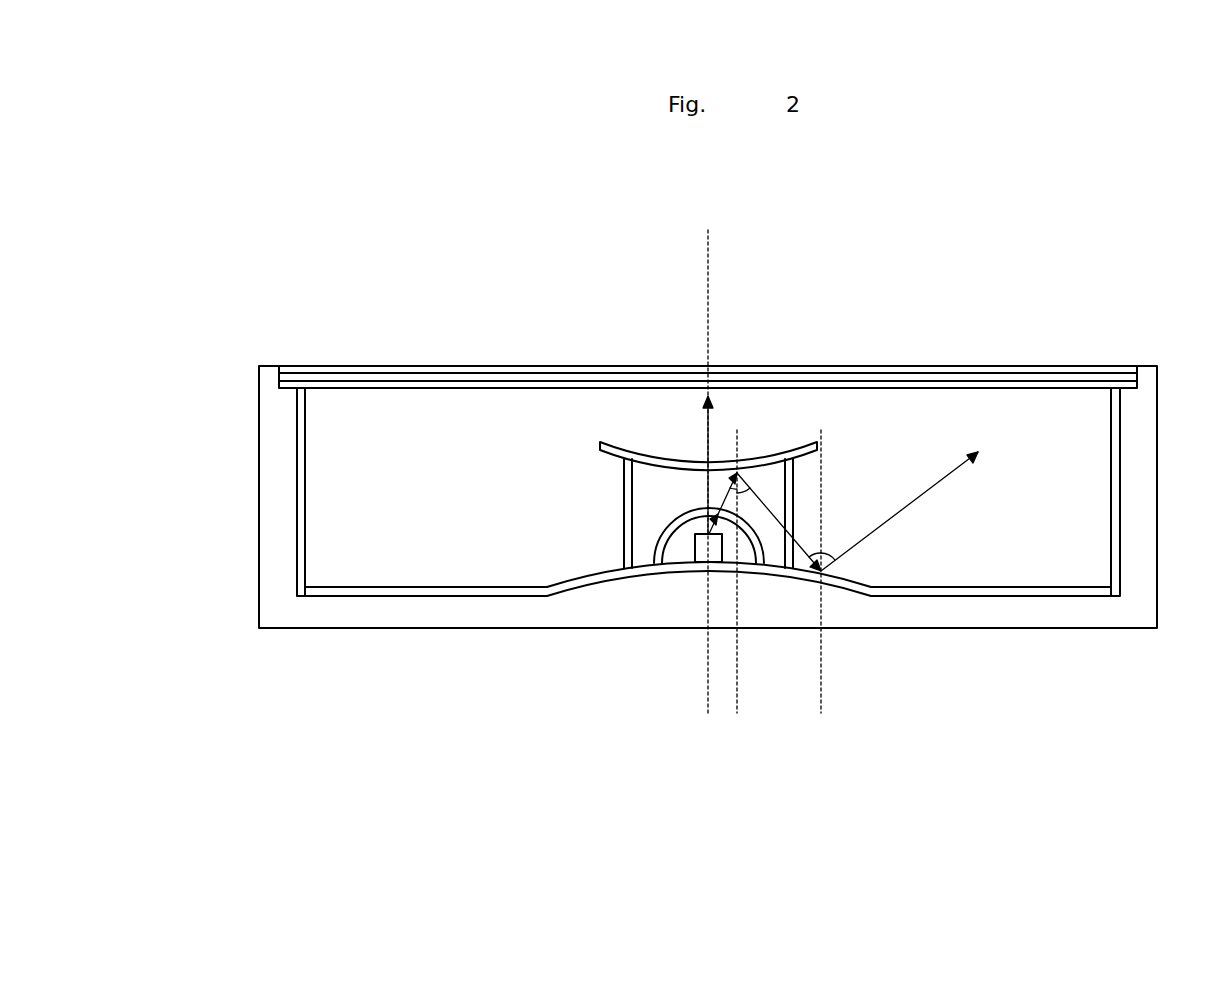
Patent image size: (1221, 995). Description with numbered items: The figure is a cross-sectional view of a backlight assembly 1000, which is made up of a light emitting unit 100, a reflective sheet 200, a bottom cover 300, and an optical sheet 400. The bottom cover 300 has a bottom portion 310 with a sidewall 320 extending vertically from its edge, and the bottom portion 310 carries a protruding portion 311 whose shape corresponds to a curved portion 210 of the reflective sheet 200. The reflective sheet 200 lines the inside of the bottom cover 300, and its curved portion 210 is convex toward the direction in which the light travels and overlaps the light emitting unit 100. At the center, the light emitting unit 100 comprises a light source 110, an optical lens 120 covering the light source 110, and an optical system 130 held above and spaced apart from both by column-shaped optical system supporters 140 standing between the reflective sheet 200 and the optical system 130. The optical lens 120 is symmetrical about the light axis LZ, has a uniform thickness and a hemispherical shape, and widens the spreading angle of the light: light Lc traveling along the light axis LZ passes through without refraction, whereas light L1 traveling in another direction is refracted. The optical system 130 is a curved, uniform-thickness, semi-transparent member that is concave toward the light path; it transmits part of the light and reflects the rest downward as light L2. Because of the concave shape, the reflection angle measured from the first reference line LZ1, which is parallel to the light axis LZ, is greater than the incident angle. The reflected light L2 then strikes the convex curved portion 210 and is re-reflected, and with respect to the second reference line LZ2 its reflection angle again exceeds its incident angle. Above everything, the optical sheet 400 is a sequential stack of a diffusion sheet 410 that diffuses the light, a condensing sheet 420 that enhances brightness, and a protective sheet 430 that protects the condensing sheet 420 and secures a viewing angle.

The backlight assembly 1000 is at (1152, 246).
The light emitting unit 100 is at (638, 501).
The light source 110 is at (695, 549).
The optical lens 120 is at (660, 513).
The optical system 130 is at (598, 446).
The optical system supporter 140 is at (624, 476).
The reflective sheet 200 is at (645, 556).
The curved portion 210 is at (525, 592).
The bottom cover 300 is at (638, 530).
The bottom portion 310 is at (318, 626).
The protruding portion 311 is at (645, 598).
The sidewall 320 is at (650, 492).
The optical sheet 400 is at (708, 320).
The diffusion sheet 410 is at (516, 296).
The condensing sheet 420 is at (592, 378).
The protective sheet 430 is at (538, 367).
The light axis LZ is at (703, 486).
The first reference line LZ1 is at (753, 586).
The second reference line LZ2 is at (822, 586).
The light traveling along the light axis Lc is at (703, 419).
The light traveling in a direction different from the light axis L1 is at (733, 558).
The light reflected by the optical system L2 is at (768, 501).